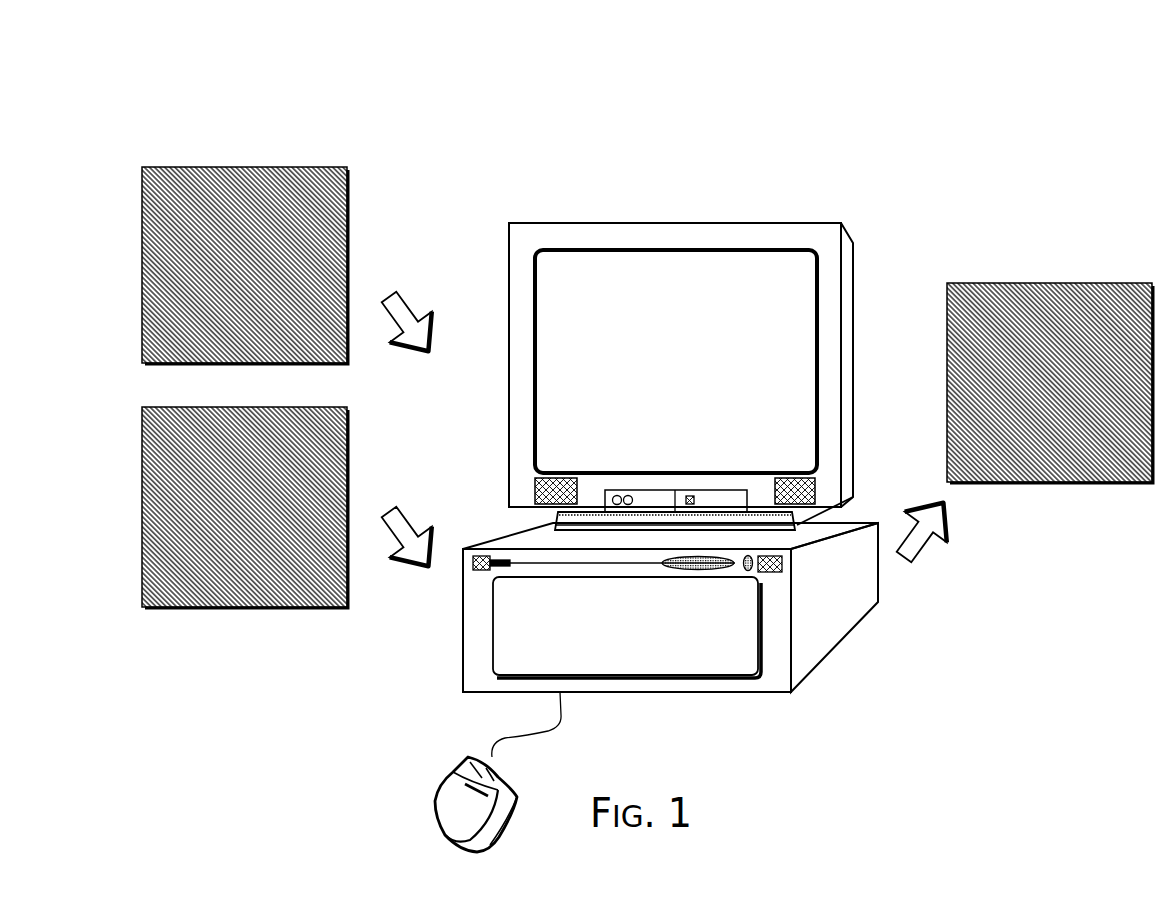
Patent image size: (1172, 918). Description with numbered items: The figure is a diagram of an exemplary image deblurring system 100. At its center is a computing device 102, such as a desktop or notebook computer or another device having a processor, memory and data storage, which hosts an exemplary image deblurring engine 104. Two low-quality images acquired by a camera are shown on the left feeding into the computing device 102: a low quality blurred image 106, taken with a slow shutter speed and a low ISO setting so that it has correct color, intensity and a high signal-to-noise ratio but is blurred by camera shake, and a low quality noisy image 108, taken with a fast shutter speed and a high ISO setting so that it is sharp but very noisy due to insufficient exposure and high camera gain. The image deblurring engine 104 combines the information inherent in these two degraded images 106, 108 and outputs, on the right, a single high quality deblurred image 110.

The image deblurring system 100 is at (677, 84).
The computing device 102 is at (667, 537).
The image deblurring engine 104 is at (610, 646).
The blurred image 106 is at (245, 148).
The noisy image 108 is at (248, 628).
The high-quality image 110 is at (1048, 263).